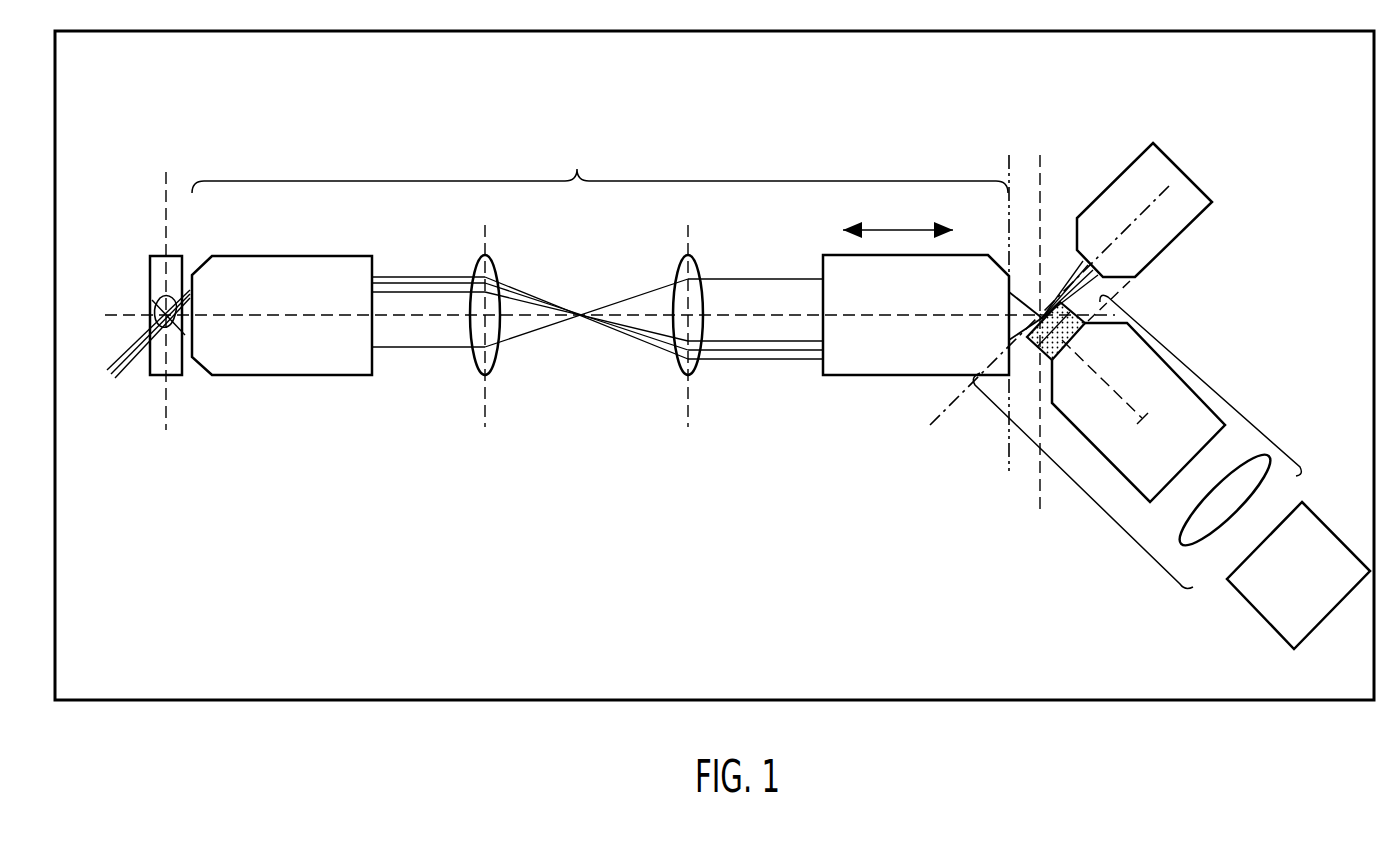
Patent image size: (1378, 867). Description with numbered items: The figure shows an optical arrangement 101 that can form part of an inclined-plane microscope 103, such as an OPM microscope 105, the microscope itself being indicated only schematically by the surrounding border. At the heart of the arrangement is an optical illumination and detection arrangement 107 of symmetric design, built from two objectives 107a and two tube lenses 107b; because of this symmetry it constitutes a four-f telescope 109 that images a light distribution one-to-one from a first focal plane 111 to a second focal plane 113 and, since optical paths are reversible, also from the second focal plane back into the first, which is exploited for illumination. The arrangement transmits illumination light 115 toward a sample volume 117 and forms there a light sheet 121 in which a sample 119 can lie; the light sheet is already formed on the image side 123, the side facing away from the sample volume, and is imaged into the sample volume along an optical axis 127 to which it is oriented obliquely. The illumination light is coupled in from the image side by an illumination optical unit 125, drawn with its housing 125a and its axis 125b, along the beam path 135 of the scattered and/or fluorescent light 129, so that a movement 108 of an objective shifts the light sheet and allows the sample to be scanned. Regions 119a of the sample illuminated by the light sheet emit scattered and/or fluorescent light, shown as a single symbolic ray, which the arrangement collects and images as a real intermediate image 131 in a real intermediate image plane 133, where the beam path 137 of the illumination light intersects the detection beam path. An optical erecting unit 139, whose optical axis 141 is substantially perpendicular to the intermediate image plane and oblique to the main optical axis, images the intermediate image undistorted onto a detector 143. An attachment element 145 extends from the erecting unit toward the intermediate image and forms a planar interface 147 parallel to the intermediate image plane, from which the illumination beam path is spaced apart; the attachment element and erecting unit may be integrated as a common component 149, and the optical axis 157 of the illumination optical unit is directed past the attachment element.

The optical arrangement 101 is at (822, 558).
The inclined-plane microscope 103 is at (714, 392).
The OPM microscope 105 is at (1062, 700).
The optical illumination and detection arrangement 107 is at (703, 289).
The 4f telescope 109 is at (703, 289).
The objective 107a is at (345, 376).
The tube lens 107b is at (495, 365).
The movement of an objective 108 is at (897, 230).
The first focal plane 111 is at (1040, 173).
The second focal plane 113 is at (166, 174).
The illumination light 115 is at (802, 255).
The sample volume 117 is at (150, 292).
The illuminated region of the sample 119a is at (120, 269).
The sample 119 is at (158, 296).
The light sheet 121 is at (150, 325).
The image side 123 is at (1021, 481).
The illumination optical unit 125 is at (1192, 222).
The detector housing 125a is at (1192, 222).
The detection axis 125b is at (1163, 190).
The optical axis of the illumination and detection arrangement 127 is at (745, 313).
The scattered and/or fluorescent light 129 is at (597, 291).
The real intermediate image 131 is at (1031, 290).
The real intermediate image plane 133 is at (1192, 222).
The beam path of the scattered and/or fluorescent light 135 is at (183, 340).
The beam path of the illumination light 137 is at (437, 290).
The optical erecting unit 139 is at (1200, 359).
The optical axis of the erecting unit 141 is at (1147, 408).
The detector 143 is at (1322, 524).
The attachment element 145 is at (1031, 325).
The interface 147 is at (1022, 318).
The common component 149 is at (1068, 488).
The optical axis of the illumination optical unit 157 is at (952, 404).